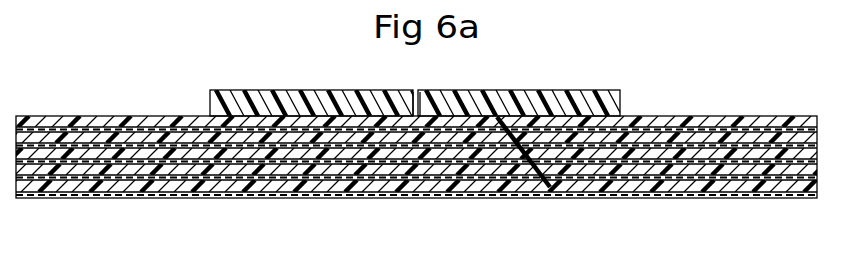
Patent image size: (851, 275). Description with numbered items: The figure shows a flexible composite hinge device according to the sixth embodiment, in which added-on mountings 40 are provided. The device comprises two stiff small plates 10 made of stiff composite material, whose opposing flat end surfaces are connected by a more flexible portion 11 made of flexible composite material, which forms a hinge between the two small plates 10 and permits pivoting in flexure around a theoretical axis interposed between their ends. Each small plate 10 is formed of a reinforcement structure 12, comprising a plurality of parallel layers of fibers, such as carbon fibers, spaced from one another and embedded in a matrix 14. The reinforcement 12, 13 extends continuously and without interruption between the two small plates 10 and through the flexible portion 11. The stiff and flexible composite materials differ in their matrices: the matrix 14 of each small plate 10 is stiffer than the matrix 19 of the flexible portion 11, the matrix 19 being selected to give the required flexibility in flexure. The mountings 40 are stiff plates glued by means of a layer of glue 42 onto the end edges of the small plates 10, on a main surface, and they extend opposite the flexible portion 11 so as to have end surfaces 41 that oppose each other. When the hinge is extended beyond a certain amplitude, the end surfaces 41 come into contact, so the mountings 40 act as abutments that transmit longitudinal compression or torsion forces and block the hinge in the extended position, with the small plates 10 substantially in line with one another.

The small plate 10 is at (416, 158).
The flexible portion 11 is at (423, 81).
The reinforcement structure 12 is at (241, 120).
The reinforcement 13 is at (496, 143).
The matrix 14 is at (69, 140).
The matrix 19 is at (374, 157).
The mounting 40 is at (313, 108).
The end surface 41 is at (432, 104).
The layer of glue 42 is at (243, 112).